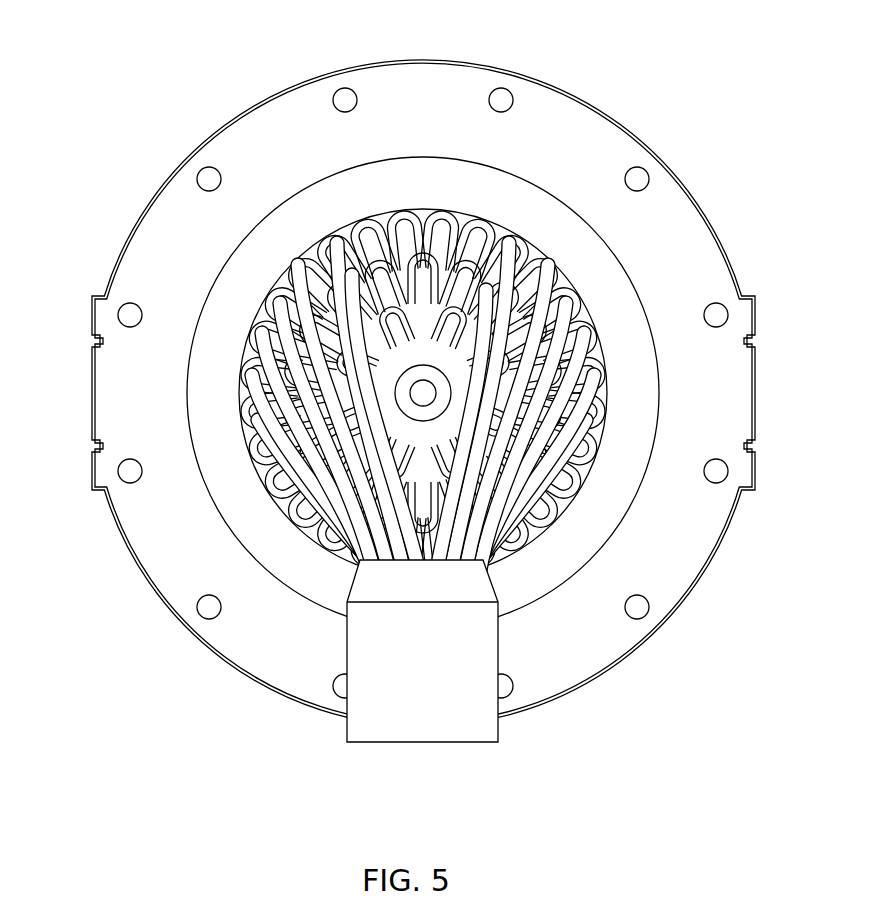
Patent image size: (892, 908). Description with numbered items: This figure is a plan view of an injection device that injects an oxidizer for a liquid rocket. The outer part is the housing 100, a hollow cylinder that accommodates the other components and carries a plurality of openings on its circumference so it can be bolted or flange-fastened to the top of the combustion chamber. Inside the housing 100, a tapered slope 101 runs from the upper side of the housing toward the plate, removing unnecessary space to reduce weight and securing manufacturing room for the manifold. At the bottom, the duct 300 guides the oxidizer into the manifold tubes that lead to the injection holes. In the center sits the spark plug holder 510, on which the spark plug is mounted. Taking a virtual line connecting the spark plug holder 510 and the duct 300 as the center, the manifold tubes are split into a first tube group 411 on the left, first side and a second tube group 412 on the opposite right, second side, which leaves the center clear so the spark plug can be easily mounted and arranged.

The housing 100 is at (197, 148).
The tapered slope 101 is at (232, 300).
The duct 300 is at (417, 742).
The first tube group 411 is at (335, 428).
The second tube group 412 is at (500, 427).
The spark plug holder 510 is at (433, 372).